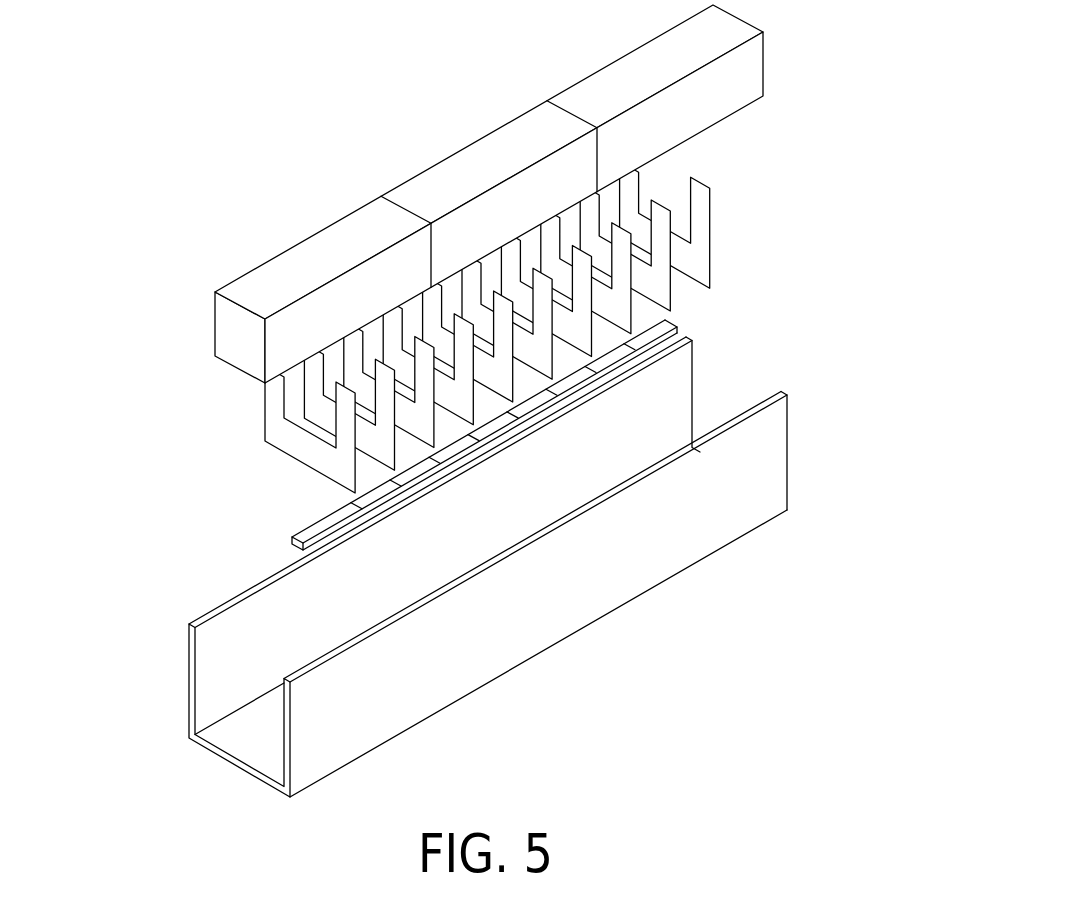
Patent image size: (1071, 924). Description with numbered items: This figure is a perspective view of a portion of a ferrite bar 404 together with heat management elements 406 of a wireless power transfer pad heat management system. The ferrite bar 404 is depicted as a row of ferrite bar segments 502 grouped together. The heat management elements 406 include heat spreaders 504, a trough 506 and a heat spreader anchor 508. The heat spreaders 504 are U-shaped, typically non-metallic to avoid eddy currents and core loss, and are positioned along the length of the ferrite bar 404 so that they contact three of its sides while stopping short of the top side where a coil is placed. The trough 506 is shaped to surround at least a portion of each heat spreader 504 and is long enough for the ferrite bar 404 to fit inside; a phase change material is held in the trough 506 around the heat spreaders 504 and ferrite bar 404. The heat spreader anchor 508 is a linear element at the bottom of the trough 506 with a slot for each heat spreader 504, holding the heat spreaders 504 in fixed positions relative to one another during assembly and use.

The ferrite bar 404 is at (170, 224).
The heat management elements 406 is at (822, 172).
The ferrite bar segments 502 is at (443, 157).
The heat spreaders 504 is at (265, 413).
The trough 506 is at (232, 598).
The heat spreader anchor 508 is at (328, 517).